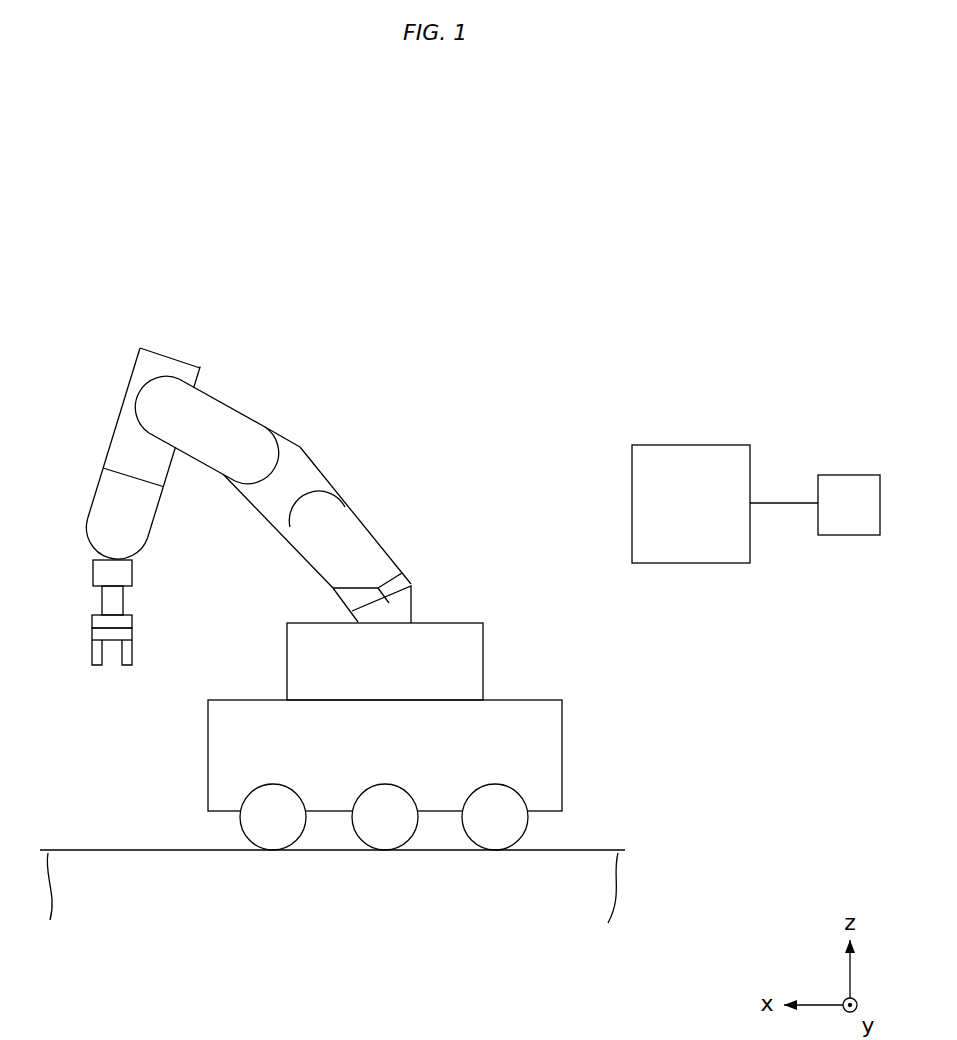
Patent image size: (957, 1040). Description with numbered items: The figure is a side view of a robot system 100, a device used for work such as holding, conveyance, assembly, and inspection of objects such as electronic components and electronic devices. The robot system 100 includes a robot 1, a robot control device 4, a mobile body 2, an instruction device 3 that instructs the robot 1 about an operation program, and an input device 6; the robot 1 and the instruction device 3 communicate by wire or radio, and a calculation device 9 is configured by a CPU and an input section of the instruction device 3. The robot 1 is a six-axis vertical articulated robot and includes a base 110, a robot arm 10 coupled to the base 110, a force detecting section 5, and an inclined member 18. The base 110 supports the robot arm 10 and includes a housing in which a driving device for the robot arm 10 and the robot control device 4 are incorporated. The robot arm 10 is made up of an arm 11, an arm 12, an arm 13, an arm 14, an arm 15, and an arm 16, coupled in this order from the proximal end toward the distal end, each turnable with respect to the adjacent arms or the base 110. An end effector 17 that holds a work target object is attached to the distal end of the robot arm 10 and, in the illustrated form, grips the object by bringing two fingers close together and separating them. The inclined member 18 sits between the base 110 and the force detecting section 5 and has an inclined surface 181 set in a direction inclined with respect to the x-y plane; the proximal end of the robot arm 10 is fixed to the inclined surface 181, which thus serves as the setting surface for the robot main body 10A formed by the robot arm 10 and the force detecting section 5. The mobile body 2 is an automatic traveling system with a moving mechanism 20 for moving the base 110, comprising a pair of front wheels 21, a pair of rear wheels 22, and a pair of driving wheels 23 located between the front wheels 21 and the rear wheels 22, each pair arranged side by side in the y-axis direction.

The robot system 100 is at (608, 180).
The robot 1 is at (360, 348).
The robot arm 10 is at (176, 354).
The robot main body 10A is at (357, 489).
The arm 11 is at (347, 543).
The arm 12 is at (291, 473).
The arm 13 is at (235, 425).
The arm 14 is at (133, 450).
The arm 15 is at (120, 517).
The arm 16 is at (120, 573).
The end effector 17 is at (135, 622).
The inclined member 18 is at (416, 600).
The inclined surface 181 is at (333, 588).
The force detecting section 5 is at (409, 581).
The robot control device 4 is at (347, 663).
The base 110 is at (453, 672).
The mobile body 2 is at (190, 760).
The moving mechanism 20 is at (510, 775).
The front wheels 21 is at (275, 834).
The rear wheels 22 is at (496, 834).
The driving wheels 23 is at (385, 835).
The instruction device 3 is at (720, 445).
The calculation device 9 is at (688, 500).
The input device 6 is at (848, 475).